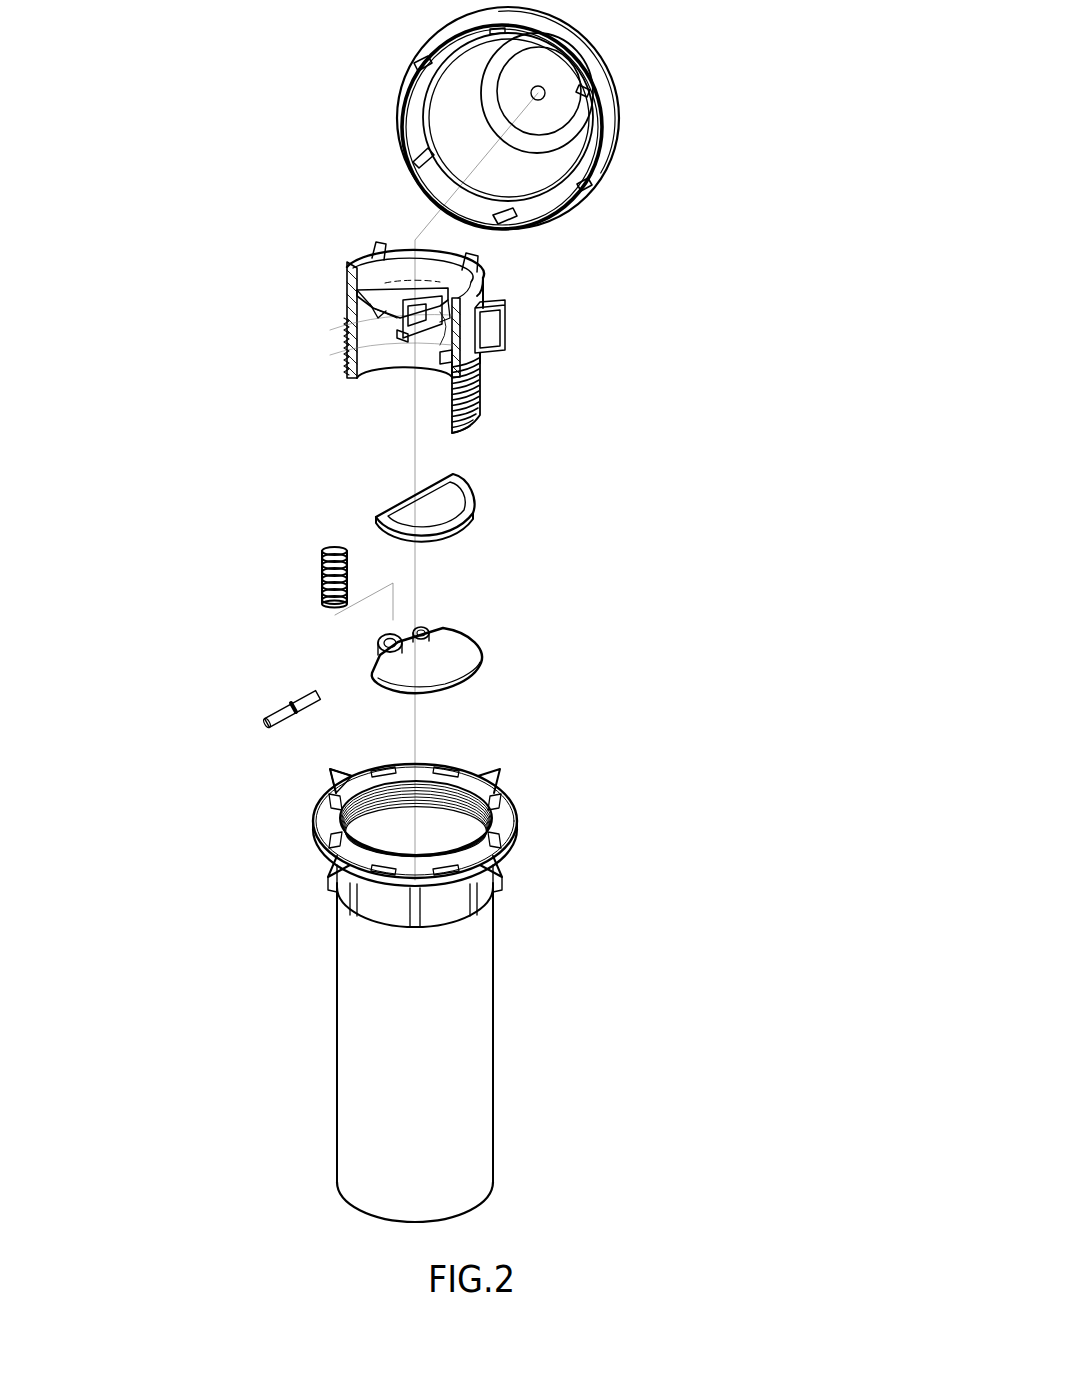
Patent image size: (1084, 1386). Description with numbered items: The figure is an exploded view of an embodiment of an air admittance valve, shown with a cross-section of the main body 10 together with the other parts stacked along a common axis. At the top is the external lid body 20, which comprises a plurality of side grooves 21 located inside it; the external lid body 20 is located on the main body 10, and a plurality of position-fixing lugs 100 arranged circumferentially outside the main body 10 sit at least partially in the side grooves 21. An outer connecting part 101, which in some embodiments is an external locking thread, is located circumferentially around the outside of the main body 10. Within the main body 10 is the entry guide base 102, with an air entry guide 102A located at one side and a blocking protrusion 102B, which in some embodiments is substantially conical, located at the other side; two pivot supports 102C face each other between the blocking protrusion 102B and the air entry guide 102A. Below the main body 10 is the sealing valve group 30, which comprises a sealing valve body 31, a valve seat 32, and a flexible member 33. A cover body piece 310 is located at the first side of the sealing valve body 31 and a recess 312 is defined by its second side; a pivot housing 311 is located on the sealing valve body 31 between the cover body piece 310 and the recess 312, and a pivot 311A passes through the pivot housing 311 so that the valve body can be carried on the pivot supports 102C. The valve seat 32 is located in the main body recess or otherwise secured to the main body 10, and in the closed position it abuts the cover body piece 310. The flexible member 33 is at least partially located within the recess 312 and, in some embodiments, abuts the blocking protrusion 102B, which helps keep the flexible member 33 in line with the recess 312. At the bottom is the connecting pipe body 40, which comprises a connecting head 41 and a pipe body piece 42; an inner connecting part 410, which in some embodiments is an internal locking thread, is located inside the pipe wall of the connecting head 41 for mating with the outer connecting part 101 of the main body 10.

The main body 10 is at (465, 324).
The external lid body 20 is at (545, 118).
The side groove 21 is at (408, 68).
The sealing valve group 30 is at (395, 611).
The sealing valve body 31 is at (360, 679).
The valve seat 32 is at (470, 520).
The flexible member 33 is at (348, 573).
The connecting pipe body 40 is at (493, 984).
The connecting head 41 is at (492, 836).
The pipe body piece 42 is at (443, 1117).
The position-fixing lug 100 is at (490, 330).
The outer connecting part 101 is at (478, 410).
The entry guide base 102 is at (411, 282).
The air entry guide 102A is at (480, 283).
The blocking protrusion 102B is at (378, 307).
The pivot support 102C is at (400, 330).
The cover body piece 310 is at (440, 672).
The pivot housing 311 is at (380, 660).
The pivot 311A is at (275, 700).
The recess 312 is at (375, 637).
The inner connecting part 410 is at (507, 783).